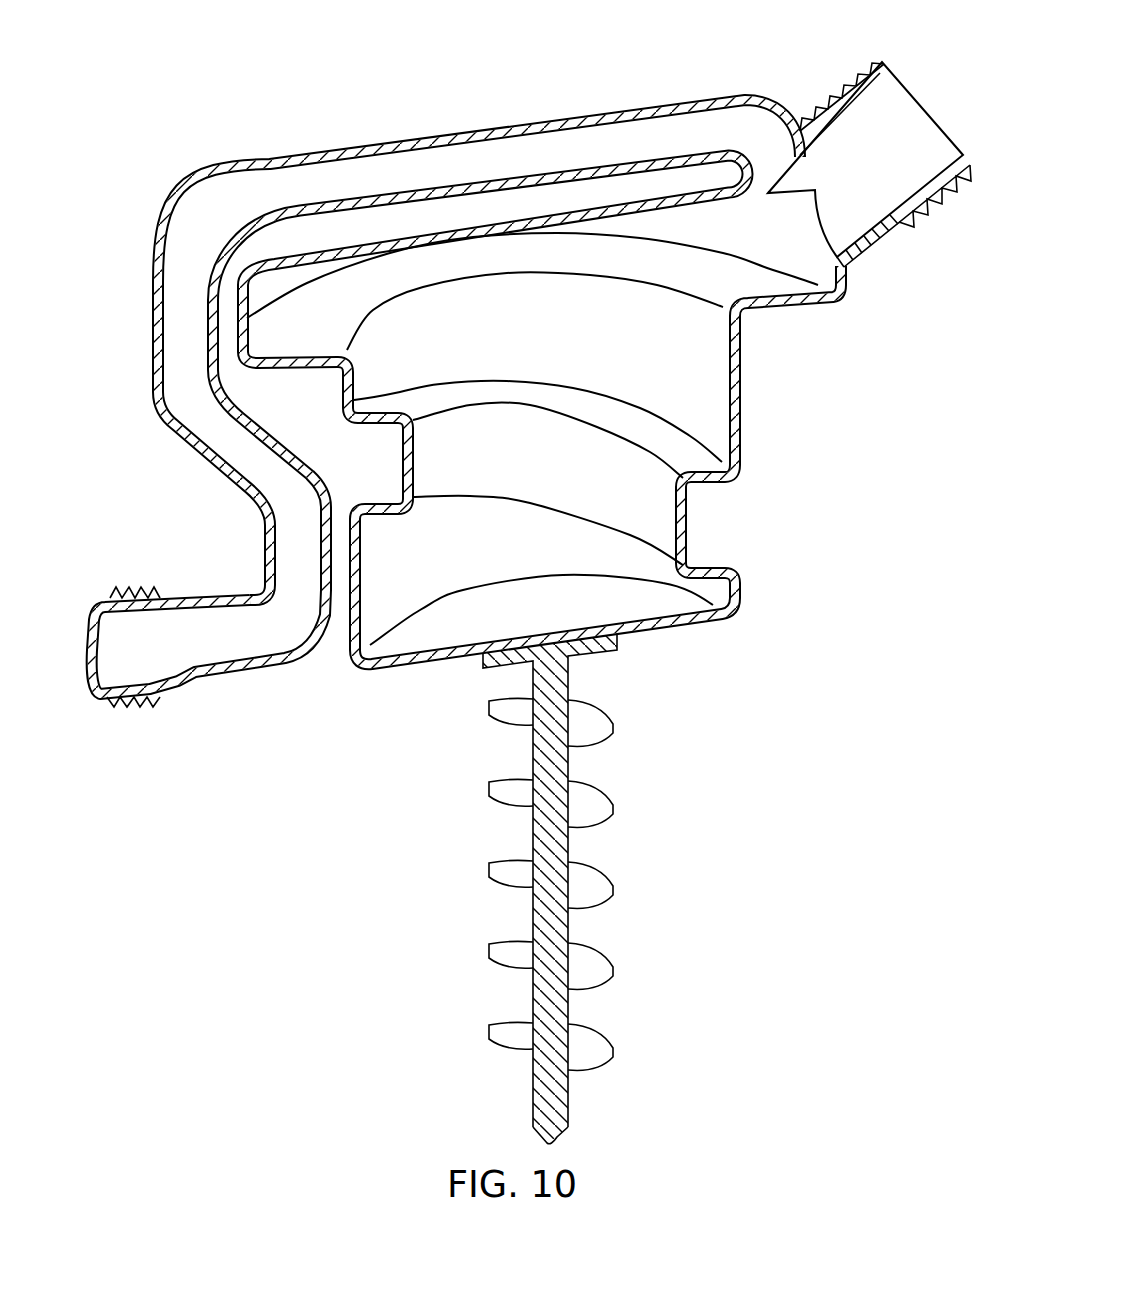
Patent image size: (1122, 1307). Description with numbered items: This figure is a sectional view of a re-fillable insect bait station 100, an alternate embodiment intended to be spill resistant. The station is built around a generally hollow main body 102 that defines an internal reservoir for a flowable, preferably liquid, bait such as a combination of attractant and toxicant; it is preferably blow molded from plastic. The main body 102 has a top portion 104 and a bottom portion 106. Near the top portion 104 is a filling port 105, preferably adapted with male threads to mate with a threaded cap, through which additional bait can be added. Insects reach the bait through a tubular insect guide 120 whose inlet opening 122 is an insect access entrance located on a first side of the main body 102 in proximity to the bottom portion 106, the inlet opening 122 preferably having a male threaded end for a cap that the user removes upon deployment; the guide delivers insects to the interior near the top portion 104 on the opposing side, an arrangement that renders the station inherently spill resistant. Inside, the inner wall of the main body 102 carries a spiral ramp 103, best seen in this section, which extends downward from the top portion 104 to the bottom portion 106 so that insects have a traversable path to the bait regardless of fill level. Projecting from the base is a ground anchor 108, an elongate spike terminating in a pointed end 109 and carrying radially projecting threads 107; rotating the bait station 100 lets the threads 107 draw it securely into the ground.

The insect bait station 100 is at (531, 576).
The main body 102 is at (740, 466).
The spiral ramp 103 is at (740, 413).
The top portion 104 is at (803, 307).
The filling port 105 is at (852, 72).
The bottom portion 106 is at (743, 592).
The projecting threads 107 is at (488, 797).
The ground anchor 108 is at (558, 889).
The pointed end 109 is at (533, 1133).
The tubular insect guide 120 is at (265, 540).
The inlet opening 122 is at (158, 700).